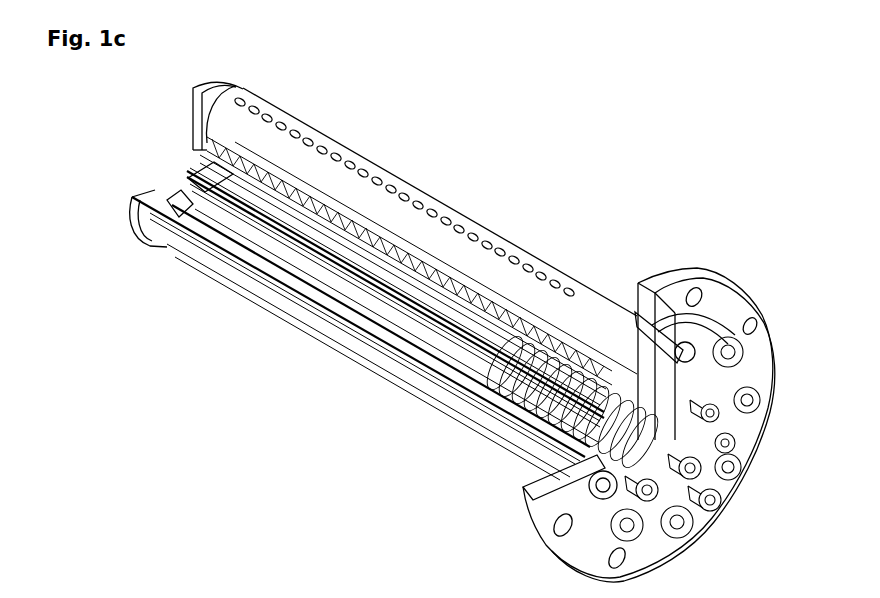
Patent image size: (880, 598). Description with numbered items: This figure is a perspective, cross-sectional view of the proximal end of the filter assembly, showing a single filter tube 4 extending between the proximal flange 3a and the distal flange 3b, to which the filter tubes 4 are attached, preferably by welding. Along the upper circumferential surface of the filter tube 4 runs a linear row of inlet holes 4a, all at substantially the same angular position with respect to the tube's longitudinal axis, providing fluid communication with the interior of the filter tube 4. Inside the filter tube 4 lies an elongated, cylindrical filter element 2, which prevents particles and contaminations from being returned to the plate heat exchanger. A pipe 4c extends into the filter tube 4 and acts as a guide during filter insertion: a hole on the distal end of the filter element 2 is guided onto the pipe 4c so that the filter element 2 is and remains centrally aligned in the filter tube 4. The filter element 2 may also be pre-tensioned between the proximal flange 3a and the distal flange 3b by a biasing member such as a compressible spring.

The filter element 2 is at (403, 280).
The proximal flange 3a is at (687, 275).
The distal flange 3b is at (200, 88).
The filter tube 4 is at (583, 307).
The inlet holes 4a is at (337, 153).
The pipe 4c is at (193, 153).